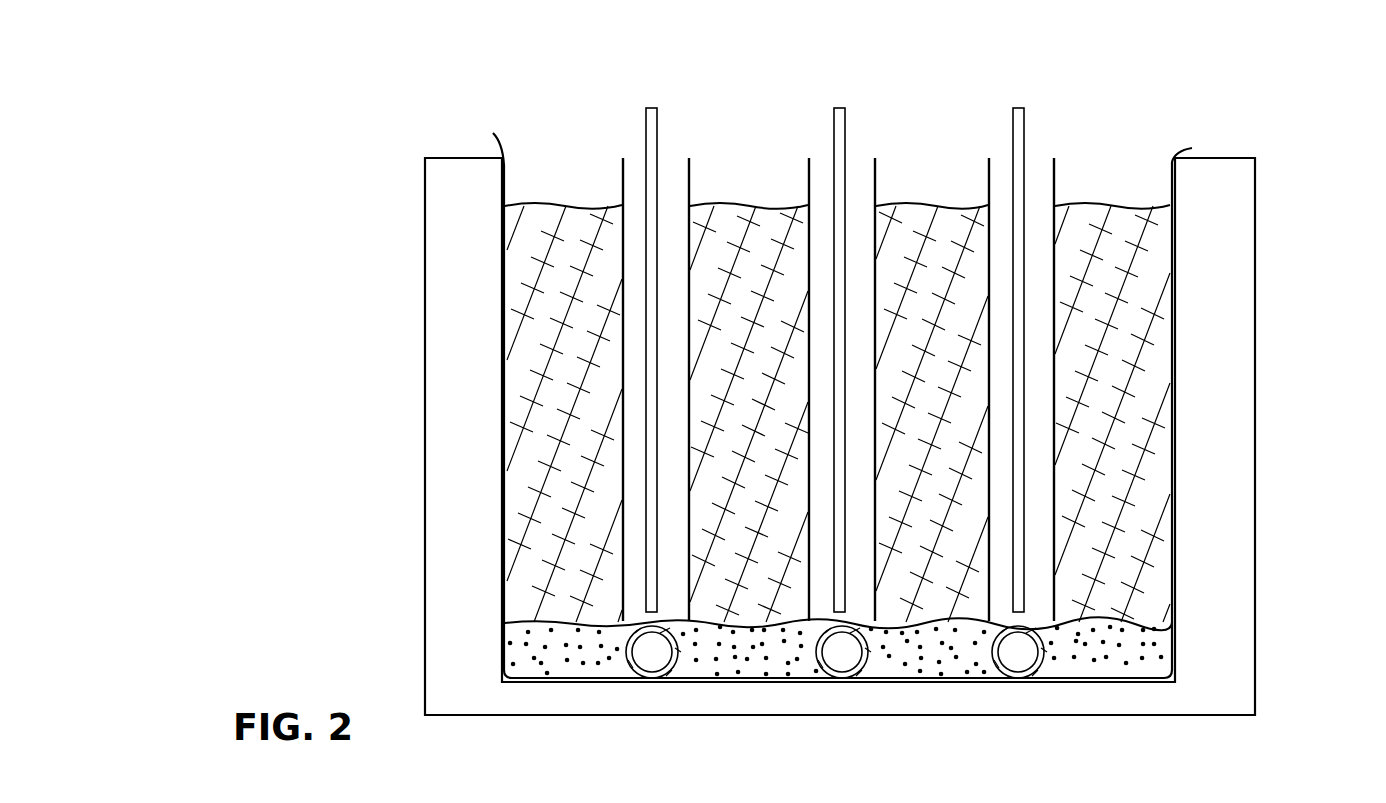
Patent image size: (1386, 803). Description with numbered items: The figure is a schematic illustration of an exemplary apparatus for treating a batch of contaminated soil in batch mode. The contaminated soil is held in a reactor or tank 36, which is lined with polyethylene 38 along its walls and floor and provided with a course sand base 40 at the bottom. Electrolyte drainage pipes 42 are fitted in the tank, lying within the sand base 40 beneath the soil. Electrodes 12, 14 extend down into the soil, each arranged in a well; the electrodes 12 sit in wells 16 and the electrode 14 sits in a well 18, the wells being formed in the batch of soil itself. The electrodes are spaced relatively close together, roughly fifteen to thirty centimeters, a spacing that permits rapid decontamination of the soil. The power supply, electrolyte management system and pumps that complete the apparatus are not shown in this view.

The electrode 12 is at (653, 107).
The electrode 14 is at (838, 107).
The well 16 is at (672, 167).
The well 18 is at (857, 183).
The reactor or tank 36 is at (450, 284).
The polyethylene 38 is at (501, 150).
The course sand base 40 is at (709, 651).
The electrolyte drainage pipes 42 is at (842, 652).